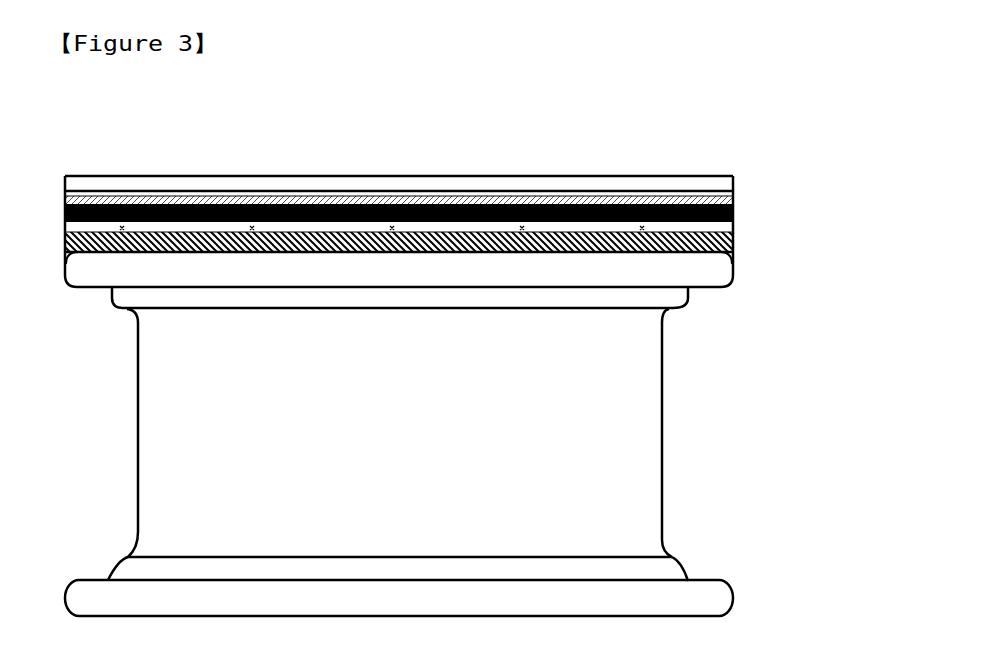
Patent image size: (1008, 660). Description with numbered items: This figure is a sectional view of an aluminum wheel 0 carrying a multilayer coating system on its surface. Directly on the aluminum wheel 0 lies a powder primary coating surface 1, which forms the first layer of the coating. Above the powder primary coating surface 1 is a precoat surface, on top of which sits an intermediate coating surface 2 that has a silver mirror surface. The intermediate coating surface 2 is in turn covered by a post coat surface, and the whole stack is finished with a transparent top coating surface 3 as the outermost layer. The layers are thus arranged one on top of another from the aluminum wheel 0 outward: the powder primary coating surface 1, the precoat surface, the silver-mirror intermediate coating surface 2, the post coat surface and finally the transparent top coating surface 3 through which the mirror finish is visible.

The aluminum wheel 0 is at (667, 398).
The powder primary coating surface 1 is at (737, 252).
The intermediate coating surface 2 is at (738, 220).
The transparent top coating surface 3 is at (733, 184).